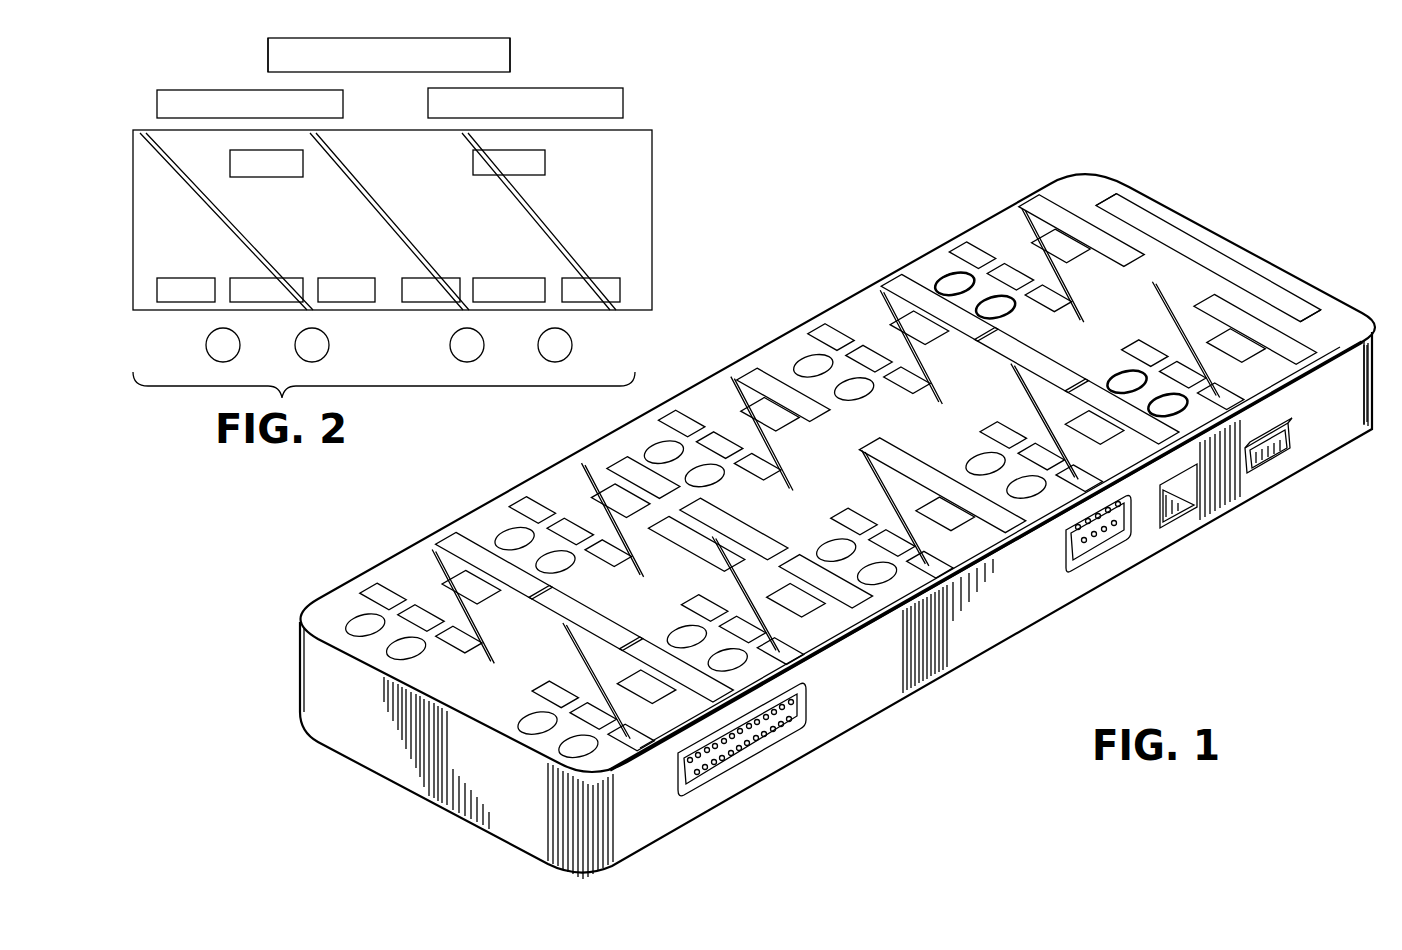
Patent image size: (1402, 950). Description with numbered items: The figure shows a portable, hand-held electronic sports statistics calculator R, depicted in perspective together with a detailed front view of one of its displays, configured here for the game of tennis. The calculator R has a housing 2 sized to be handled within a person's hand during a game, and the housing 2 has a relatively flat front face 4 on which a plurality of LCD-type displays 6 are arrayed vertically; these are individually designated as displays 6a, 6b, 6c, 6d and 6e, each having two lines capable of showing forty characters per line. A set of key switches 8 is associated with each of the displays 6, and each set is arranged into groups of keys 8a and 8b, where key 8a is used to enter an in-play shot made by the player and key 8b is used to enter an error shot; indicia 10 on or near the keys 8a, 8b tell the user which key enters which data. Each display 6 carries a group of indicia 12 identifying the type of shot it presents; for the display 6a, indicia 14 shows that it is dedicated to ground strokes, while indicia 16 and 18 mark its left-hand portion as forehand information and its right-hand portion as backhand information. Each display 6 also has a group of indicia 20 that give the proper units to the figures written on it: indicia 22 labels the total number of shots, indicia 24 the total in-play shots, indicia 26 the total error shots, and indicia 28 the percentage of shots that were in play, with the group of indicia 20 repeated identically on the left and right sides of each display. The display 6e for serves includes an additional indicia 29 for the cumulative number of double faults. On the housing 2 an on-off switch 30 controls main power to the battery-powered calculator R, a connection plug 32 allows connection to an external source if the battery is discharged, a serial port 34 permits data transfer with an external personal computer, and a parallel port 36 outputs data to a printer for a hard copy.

In FIG. 1, the housing 2 is at (1246, 250).
In FIG. 1, the front face 4 is at (1342, 328).
In FIG. 1, the displays 6 is at (1296, 398).
In FIG. 2, the display 6a is at (655, 262).
In FIG. 1, the display 6a is at (1374, 432).
In FIG. 1, the display 6b is at (1124, 458).
In FIG. 1, the display 6c is at (1008, 553).
In FIG. 1, the display 6d is at (818, 633).
In FIG. 1, the display 6e is at (657, 727).
In FIG. 1, the key switches 8 is at (348, 613).
In FIG. 2, the key 8a is at (240, 351).
In FIG. 1, the key 8a is at (972, 282).
In FIG. 2, the key 8b is at (325, 352).
In FIG. 1, the key 8b is at (1010, 301).
In FIG. 1, the indicia 10 is at (956, 275).
In FIG. 1, the electronic sports statistics calculator R is at (957, 212).
In FIG. 2, the indicia 12 is at (526, 76).
In FIG. 1, the indicia 12 is at (1172, 228).
In FIG. 2, the indicia 14 is at (410, 38).
In FIG. 1, the indicia 14 is at (1188, 243).
In FIG. 2, the indicia 16 is at (222, 88).
In FIG. 1, the indicia 16 is at (1082, 203).
In FIG. 2, the indicia 18 is at (602, 88).
In FIG. 1, the indicia 18 is at (1310, 340).
In FIG. 2, the indicia 20 is at (222, 182).
In FIG. 1, the indicia 20 is at (452, 572).
In FIG. 2, the indicia 22 is at (212, 277).
In FIG. 2, the indicia 24 is at (290, 277).
In FIG. 2, the indicia 26 is at (364, 277).
In FIG. 2, the indicia 28 is at (283, 178).
In FIG. 1, the indicia 29 is at (678, 548).
In FIG. 1, the on-off switch 30 is at (1270, 458).
In FIG. 1, the connection plug 32 is at (1186, 504).
In FIG. 1, the serial port 34 is at (1104, 551).
In FIG. 1, the parallel port 36 is at (763, 752).